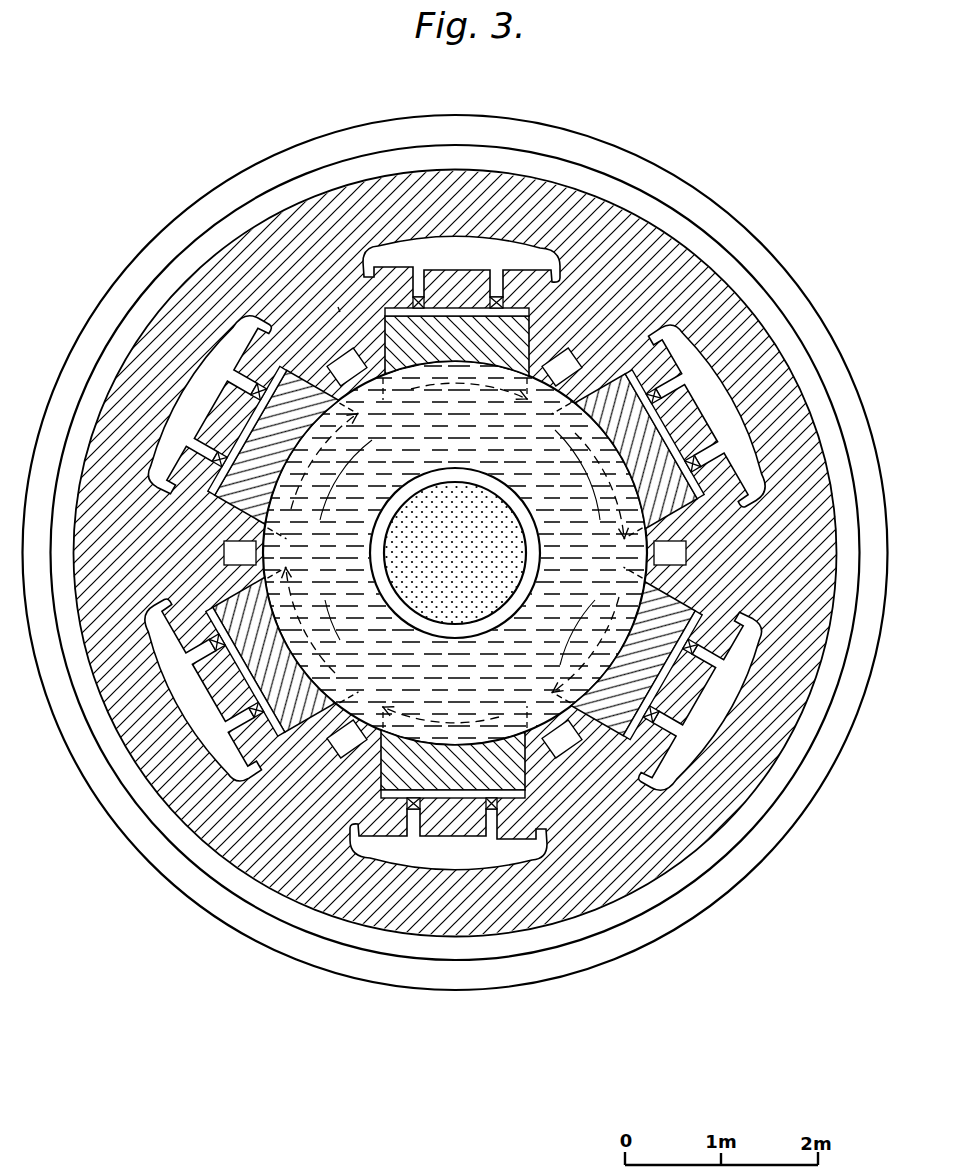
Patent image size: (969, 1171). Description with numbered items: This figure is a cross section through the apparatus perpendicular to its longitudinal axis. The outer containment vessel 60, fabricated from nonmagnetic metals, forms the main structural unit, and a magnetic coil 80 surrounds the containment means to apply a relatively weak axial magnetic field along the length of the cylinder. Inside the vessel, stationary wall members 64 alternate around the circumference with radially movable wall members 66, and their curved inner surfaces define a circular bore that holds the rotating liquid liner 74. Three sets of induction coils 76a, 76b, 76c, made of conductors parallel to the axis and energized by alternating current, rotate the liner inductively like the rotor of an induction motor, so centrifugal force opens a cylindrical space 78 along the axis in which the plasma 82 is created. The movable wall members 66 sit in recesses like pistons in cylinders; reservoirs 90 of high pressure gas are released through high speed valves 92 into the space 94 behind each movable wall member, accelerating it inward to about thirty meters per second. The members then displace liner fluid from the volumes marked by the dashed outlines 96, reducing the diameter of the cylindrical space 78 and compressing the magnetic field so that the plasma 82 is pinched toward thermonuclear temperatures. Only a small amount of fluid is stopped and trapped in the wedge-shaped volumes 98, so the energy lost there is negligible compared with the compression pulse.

The containment vessel 60 is at (258, 243).
The stationary wall members 64 is at (338, 307).
The radially movable wall members 66 is at (455, 553).
The rotating liquid liner 74 is at (545, 473).
The induction coils 76a is at (454, 367).
The induction coils 76b is at (614, 649).
The induction coils 76c is at (295, 649).
The cylindrical space 78 is at (397, 503).
The magnetic coil 80 is at (697, 207).
The plasma 82 is at (432, 560).
The reservoirs 90 is at (460, 240).
The high speed valves 92 is at (417, 296).
The space behind the movable wall member 94 is at (523, 310).
The dashed outlines 96 is at (455, 553).
The wedge-shaped volumes 98 is at (455, 553).